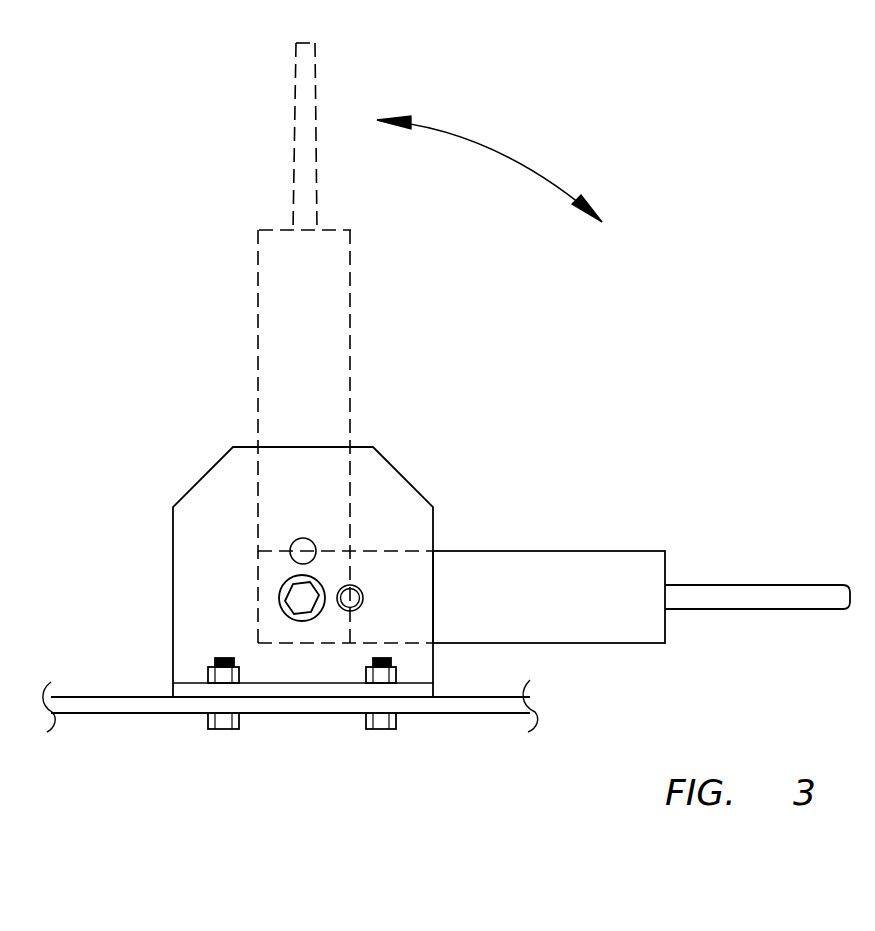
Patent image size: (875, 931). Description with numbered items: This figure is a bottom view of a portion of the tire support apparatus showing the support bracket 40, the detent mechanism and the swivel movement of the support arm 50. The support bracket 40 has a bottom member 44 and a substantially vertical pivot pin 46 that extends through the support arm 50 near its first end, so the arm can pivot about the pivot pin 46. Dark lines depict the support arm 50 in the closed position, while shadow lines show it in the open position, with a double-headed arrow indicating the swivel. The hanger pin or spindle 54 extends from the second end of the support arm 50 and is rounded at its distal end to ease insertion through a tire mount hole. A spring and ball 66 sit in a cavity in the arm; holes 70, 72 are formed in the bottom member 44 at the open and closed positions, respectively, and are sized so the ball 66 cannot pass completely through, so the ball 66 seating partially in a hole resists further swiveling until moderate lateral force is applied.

The support bracket 40 is at (390, 408).
The bottom member 44 is at (377, 478).
The pivot pin 46 is at (293, 598).
The support arm 50 is at (564, 616).
The hanger pin 54 is at (728, 595).
The ball 66 is at (358, 583).
The hole 70 is at (298, 538).
The hole 72 is at (353, 585).